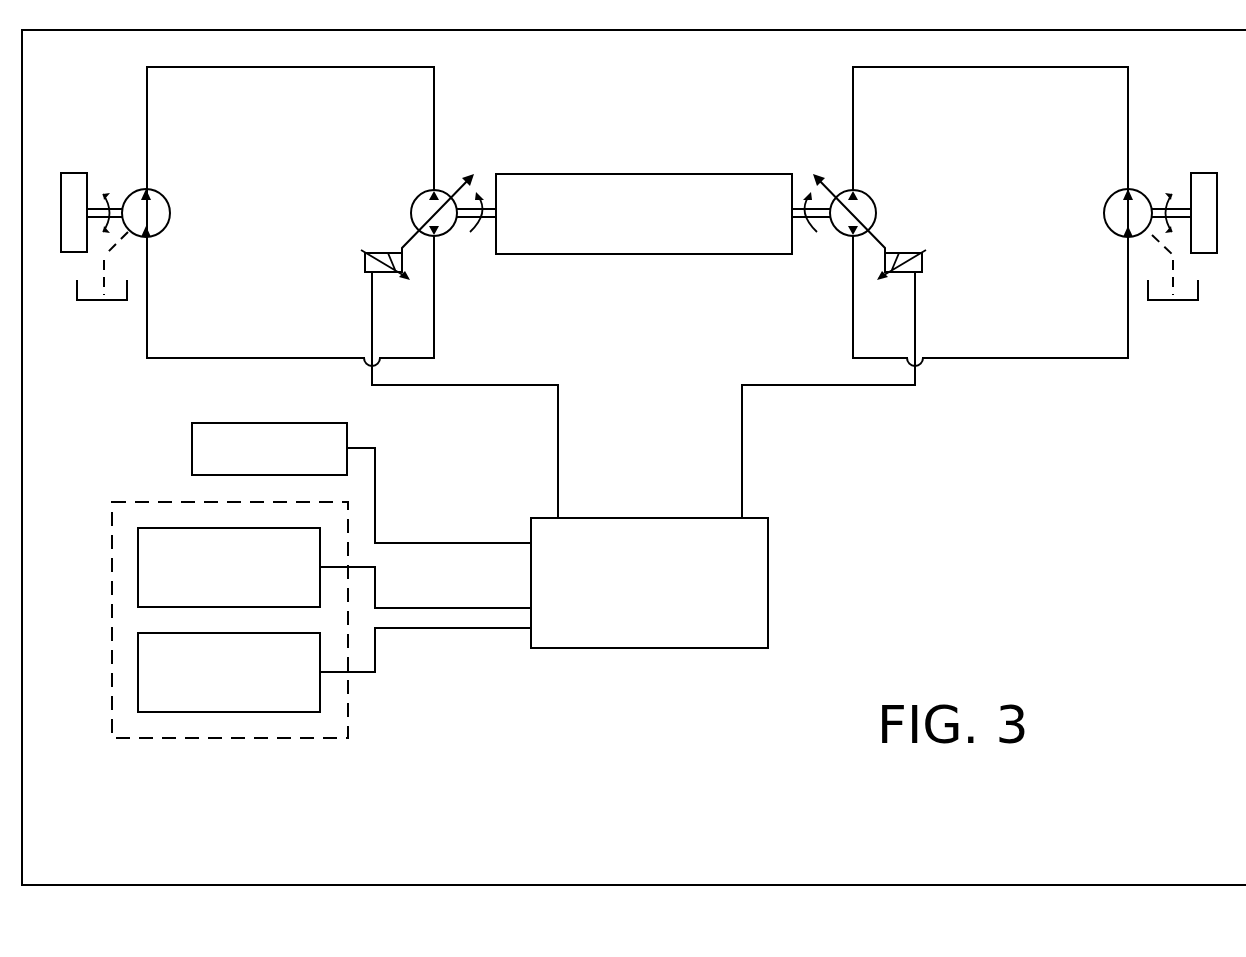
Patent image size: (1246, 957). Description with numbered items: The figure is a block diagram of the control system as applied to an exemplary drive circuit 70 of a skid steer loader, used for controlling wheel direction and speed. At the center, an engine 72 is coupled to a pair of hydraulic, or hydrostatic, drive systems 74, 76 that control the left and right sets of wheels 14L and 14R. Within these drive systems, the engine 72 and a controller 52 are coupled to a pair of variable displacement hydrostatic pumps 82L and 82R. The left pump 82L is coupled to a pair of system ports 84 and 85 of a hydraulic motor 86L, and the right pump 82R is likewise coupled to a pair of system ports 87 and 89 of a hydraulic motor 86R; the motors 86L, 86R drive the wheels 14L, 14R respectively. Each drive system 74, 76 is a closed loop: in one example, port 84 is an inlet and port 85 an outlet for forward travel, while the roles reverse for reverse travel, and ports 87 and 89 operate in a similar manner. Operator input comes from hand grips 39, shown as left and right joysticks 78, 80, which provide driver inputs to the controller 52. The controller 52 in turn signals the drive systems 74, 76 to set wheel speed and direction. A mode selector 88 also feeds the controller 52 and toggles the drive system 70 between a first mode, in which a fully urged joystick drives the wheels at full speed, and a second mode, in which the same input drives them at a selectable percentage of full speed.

The left set of wheels 14L is at (67, 173).
The right set of wheels 14R is at (1201, 173).
The hand grips 39 is at (112, 620).
The controller 52 is at (648, 648).
The drive circuit 70 is at (918, 577).
The engine 72 is at (651, 174).
The left hydraulic drive system 74 is at (218, 358).
The right hydraulic drive system 76 is at (1070, 358).
The left joystick 78 is at (170, 528).
The right joystick 80 is at (170, 712).
The left variable displacement hydrostatic pump 82L is at (452, 237).
The right variable displacement hydrostatic pump 82R is at (838, 238).
The system port 84 is at (148, 191).
The system port 85 is at (148, 236).
The left hydraulic motor 86L is at (171, 215).
The right hydraulic motor 86R is at (1104, 215).
The system port 87 is at (1126, 191).
The mode selector 88 is at (190, 447).
The system port 89 is at (1126, 236).